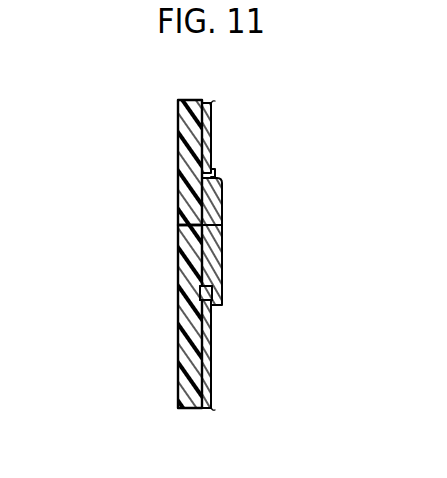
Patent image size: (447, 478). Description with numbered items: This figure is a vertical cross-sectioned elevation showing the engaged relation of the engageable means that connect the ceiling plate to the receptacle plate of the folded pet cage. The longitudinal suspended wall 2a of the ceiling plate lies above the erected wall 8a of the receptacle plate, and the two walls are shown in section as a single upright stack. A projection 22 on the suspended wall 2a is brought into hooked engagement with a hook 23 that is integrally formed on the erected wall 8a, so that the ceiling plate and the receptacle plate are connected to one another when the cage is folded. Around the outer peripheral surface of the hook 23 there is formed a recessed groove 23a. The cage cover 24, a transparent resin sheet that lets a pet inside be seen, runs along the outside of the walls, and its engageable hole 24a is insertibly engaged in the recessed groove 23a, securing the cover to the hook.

The longitudinal suspended wall 2a is at (180, 124).
The erected wall 8a is at (178, 342).
The projection 22 is at (222, 192).
The hook 23 is at (222, 214).
The recessed groove 23a is at (210, 301).
The cage cover 24 is at (212, 106).
The engageable hole 24a is at (214, 172).